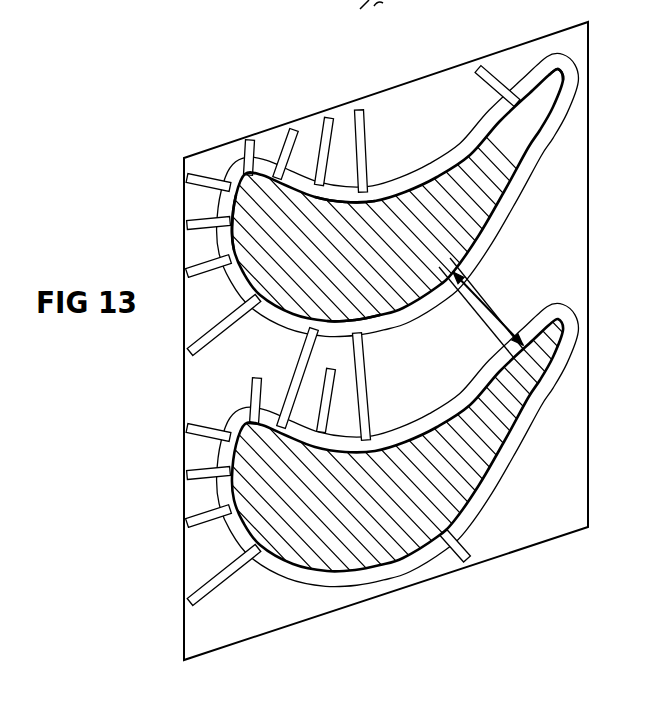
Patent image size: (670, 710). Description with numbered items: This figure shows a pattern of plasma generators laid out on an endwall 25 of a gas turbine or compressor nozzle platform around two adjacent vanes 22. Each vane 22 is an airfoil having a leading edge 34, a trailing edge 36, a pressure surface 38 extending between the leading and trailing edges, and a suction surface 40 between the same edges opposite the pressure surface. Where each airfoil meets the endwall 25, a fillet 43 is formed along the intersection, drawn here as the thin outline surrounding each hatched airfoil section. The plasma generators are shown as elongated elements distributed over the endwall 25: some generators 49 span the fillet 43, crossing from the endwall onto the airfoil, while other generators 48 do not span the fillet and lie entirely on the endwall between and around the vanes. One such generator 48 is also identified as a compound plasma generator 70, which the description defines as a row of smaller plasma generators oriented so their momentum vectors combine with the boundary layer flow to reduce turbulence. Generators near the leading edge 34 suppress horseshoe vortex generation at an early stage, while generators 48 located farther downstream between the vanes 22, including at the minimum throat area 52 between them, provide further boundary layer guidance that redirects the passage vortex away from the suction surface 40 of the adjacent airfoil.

The vane 22 is at (464, 225).
The endwall 25 is at (564, 245).
The leading edge 34 is at (236, 181).
The trailing edge 36 is at (561, 72).
The pressure surface 38 is at (350, 208).
The suction surface 40 is at (347, 319).
The fillet 43 is at (433, 414).
The plasma generator 48 is at (362, 129).
The compound plasma generator 70 is at (353, 336).
The plasma generator 49 is at (250, 394).
The minimum throat area 52 is at (500, 318).